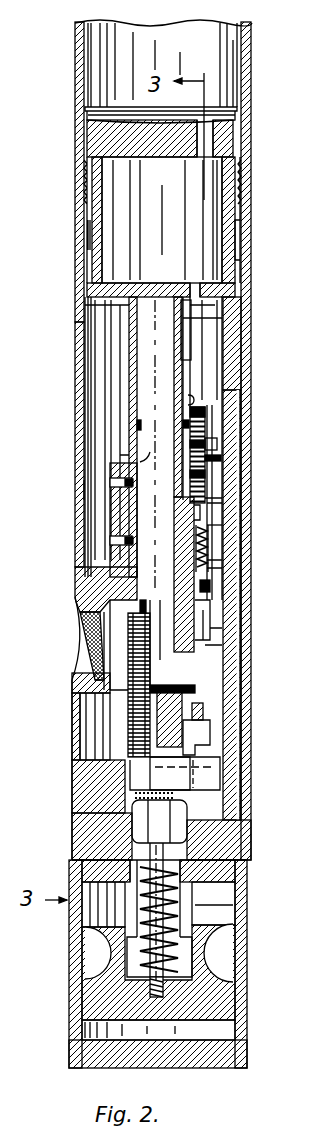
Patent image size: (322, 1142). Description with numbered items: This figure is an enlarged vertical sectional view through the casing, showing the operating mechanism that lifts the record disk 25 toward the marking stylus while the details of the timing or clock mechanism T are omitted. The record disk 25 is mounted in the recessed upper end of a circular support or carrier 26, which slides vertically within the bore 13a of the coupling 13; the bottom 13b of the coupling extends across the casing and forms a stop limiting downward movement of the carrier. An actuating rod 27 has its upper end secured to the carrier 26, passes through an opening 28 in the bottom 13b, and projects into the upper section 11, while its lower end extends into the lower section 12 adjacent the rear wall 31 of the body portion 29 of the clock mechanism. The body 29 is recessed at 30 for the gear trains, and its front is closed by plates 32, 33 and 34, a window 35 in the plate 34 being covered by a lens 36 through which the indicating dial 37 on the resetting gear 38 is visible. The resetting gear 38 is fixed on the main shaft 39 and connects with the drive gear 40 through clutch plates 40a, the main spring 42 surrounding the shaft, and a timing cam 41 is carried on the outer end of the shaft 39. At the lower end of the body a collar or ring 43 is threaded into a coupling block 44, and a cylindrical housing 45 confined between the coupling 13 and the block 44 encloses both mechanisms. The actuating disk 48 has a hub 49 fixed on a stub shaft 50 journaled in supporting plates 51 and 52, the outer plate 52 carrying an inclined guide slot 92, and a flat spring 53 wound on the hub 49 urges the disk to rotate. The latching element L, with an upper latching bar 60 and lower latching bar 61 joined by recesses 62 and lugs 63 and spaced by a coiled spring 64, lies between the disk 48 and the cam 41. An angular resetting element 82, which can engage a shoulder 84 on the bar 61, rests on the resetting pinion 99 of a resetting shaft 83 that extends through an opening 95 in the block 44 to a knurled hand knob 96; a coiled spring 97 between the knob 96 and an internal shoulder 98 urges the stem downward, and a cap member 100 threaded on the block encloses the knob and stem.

The upper section 11 is at (78, 50).
The lower section 12 is at (76, 400).
The coupling 13 is at (240, 228).
The bore 13a is at (90, 240).
The bottom 13b is at (110, 282).
The record disk 25 is at (110, 116).
The support or carrier 26 is at (100, 137).
The actuating rod 27 is at (200, 180).
The opening 28 is at (225, 292).
The body portion 29 is at (120, 333).
The recess 30 is at (120, 455).
The rear wall 31 is at (200, 318).
The plate 32 is at (120, 313).
The plate 33 is at (132, 433).
The plate 34 is at (118, 518).
The window 35 is at (100, 623).
The lens 36 is at (92, 668).
The indicating dial 37 is at (108, 640).
The resetting gear 38 is at (86, 592).
The main shaft 39 is at (196, 674).
The drive gear 40 is at (171, 606).
The clutch plates 40a is at (126, 743).
The timing cam 41 is at (204, 701).
The main spring 42 is at (211, 729).
The collar or ring 43 is at (100, 785).
The coupling block 44 is at (215, 830).
The cylindrical housing 45 is at (78, 490).
The actuating disk 48 is at (205, 482).
The hub 49 is at (212, 432).
The stub shaft 50 is at (216, 458).
The supporting plate 51 is at (183, 425).
The supporting plate 52 is at (210, 503).
The flat spring 53 is at (186, 402).
The upper latching bar 60 is at (185, 523).
The lower latching bar 61 is at (200, 620).
The recesses 62 is at (212, 588).
The lugs 63 is at (186, 562).
The coiled spring 64 is at (225, 562).
The resetting element 82 is at (221, 761).
The resetting shaft 83 is at (235, 858).
The shoulder 84 is at (206, 641).
The inclined guide slot 92 is at (232, 388).
The opening 95 is at (130, 857).
The hand knob 96 is at (215, 990).
The coiled spring 97 is at (206, 892).
The internal shoulder 98 is at (140, 870).
The resetting pinion 99 is at (136, 803).
The cap member 100 is at (246, 1018).
The latching element L is at (216, 532).
The timing or clock mechanism T is at (140, 375).